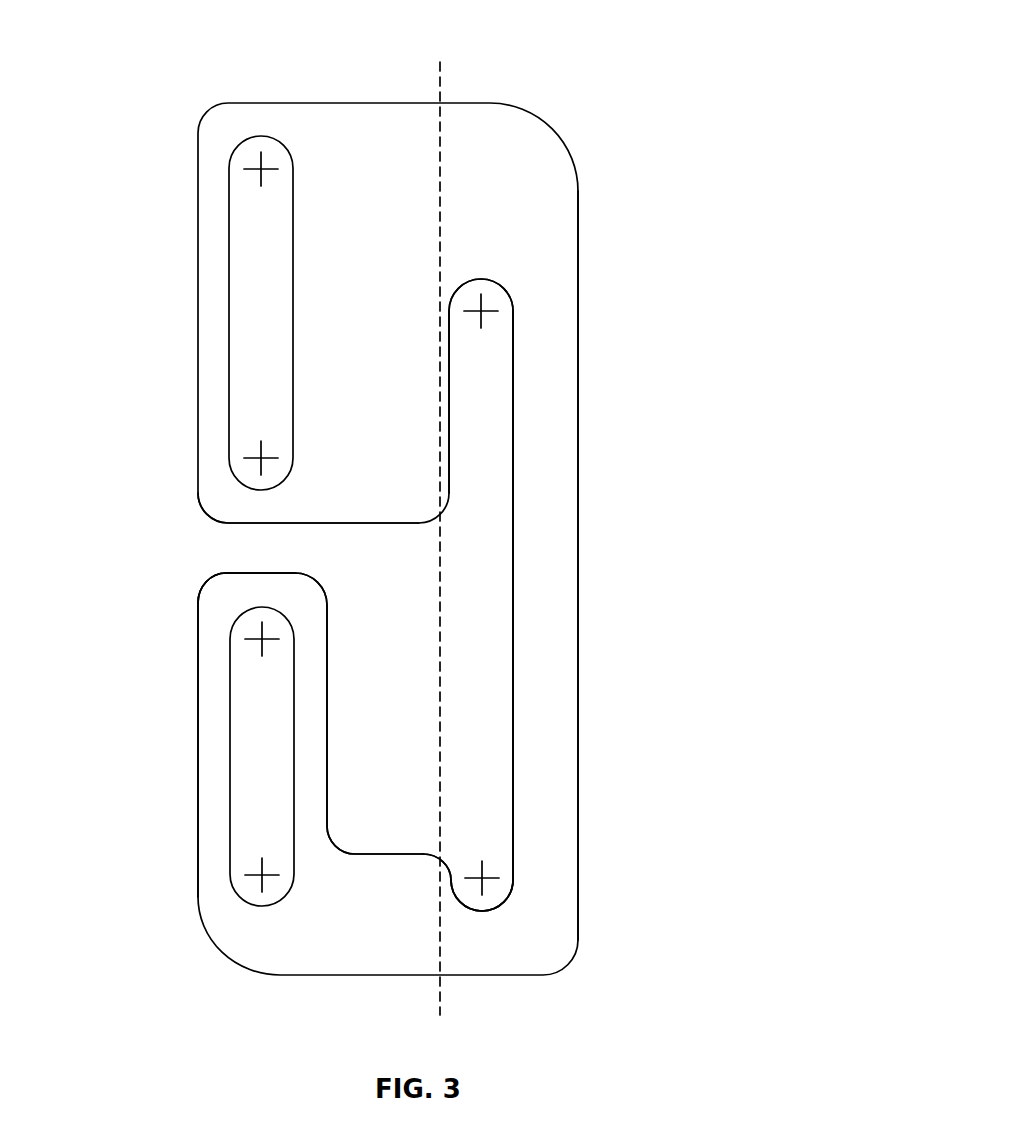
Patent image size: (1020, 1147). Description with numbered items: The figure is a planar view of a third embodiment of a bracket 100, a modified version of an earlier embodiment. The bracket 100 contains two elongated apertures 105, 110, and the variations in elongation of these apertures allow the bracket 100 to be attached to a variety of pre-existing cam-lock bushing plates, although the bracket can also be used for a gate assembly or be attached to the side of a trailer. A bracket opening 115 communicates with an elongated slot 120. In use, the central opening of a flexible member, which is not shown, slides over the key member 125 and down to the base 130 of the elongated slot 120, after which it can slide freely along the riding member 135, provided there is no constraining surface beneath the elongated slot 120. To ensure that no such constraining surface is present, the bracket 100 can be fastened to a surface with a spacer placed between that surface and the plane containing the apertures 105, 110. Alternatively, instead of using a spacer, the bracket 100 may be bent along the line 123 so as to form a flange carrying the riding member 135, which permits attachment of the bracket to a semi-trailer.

The bracket 100 is at (653, 799).
The elongated aperture 105 is at (242, 201).
The elongated aperture 110 is at (248, 880).
The bracket opening 115 is at (248, 543).
The elongated slot 120 is at (497, 342).
The line 123 is at (455, 66).
The key member 125 is at (215, 628).
The base 130 is at (487, 907).
The riding member 135 is at (547, 568).